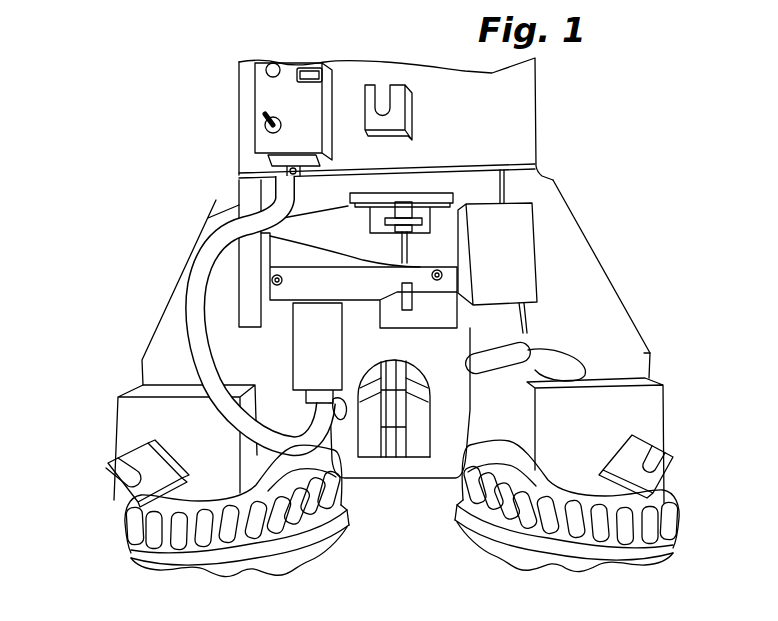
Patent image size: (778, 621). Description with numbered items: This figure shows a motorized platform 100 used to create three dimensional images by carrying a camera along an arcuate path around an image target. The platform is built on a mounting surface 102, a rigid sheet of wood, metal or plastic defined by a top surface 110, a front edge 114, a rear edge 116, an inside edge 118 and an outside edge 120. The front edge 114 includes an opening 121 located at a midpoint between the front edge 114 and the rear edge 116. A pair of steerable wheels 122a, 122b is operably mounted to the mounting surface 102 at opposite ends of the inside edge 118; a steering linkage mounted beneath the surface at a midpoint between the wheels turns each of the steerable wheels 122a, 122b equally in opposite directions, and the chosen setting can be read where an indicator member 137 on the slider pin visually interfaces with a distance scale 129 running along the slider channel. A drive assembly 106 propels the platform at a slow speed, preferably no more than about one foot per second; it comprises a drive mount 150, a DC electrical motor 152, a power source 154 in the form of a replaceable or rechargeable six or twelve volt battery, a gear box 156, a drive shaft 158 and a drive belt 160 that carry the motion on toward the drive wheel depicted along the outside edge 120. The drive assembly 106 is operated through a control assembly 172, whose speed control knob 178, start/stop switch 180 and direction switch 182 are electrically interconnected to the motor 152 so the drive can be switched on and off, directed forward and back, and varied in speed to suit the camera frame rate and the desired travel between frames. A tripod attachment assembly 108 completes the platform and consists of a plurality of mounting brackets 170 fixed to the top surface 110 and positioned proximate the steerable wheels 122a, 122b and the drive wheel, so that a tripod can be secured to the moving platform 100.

The motorized platform 100 is at (628, 134).
The mounting surface 102 is at (564, 228).
The drive assembly 106 is at (437, 200).
The tripod attachment assembly 108 is at (657, 440).
The top surface 110 is at (610, 315).
The front edge 114 is at (651, 357).
The rear edge 116 is at (140, 373).
The inside edge 118 is at (357, 480).
The outside edge 120 is at (216, 200).
The opening 121 is at (402, 447).
The steerable wheel 122a is at (675, 520).
The steerable wheel 122b is at (122, 533).
The distance scale 129 is at (378, 445).
The indicator member 137 is at (423, 440).
The drive mount 150 is at (272, 257).
The motor 152 is at (300, 345).
The power source 154 is at (538, 285).
The gear box 156 is at (368, 266).
The drive shaft 158 is at (404, 247).
The drive belt 160 is at (445, 218).
The mounting brackets 170 is at (388, 85).
The control assembly 172 is at (256, 92).
The speed control knob 178 is at (271, 63).
The start/stop switch 180 is at (308, 67).
The direction switch 182 is at (266, 117).